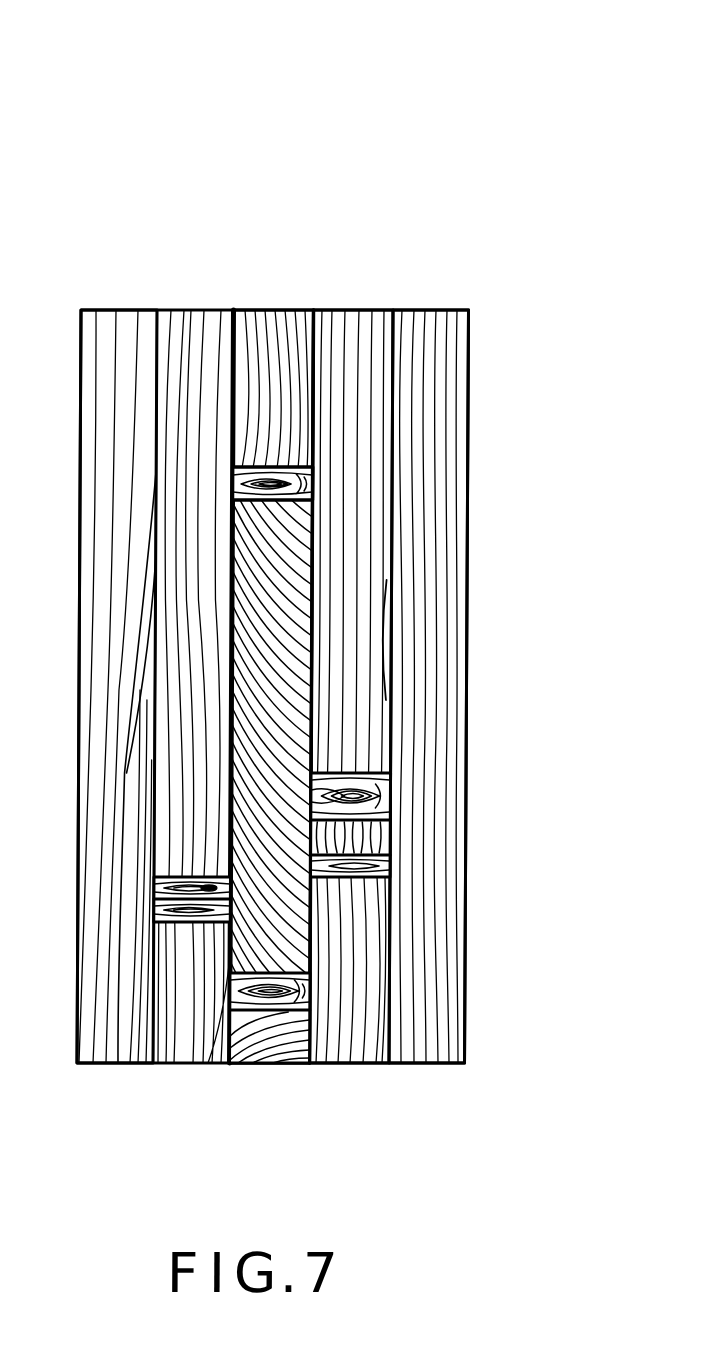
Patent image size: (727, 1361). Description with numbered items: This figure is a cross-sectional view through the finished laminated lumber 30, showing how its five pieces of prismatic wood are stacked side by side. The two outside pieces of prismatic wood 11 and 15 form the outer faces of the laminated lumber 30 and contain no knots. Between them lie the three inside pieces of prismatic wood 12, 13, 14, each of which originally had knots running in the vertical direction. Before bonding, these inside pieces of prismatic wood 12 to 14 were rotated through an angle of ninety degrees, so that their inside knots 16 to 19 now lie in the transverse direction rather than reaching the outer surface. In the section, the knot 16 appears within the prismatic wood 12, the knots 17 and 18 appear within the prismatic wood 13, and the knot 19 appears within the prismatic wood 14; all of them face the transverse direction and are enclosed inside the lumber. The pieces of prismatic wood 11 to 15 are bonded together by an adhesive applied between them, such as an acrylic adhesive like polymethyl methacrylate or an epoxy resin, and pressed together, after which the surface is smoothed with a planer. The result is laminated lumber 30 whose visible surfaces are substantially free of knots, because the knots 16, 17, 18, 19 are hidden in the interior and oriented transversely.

The laminated lumber 30 is at (277, 125).
The prismatic wood 11 is at (128, 326).
The prismatic wood 12 is at (201, 328).
The prismatic wood 13 is at (283, 328).
The prismatic wood 14 is at (367, 328).
The prismatic wood 15 is at (428, 330).
The knot 16 is at (186, 922).
The knot 17 is at (312, 480).
The knot 18 is at (271, 1010).
The knot 19 is at (391, 805).